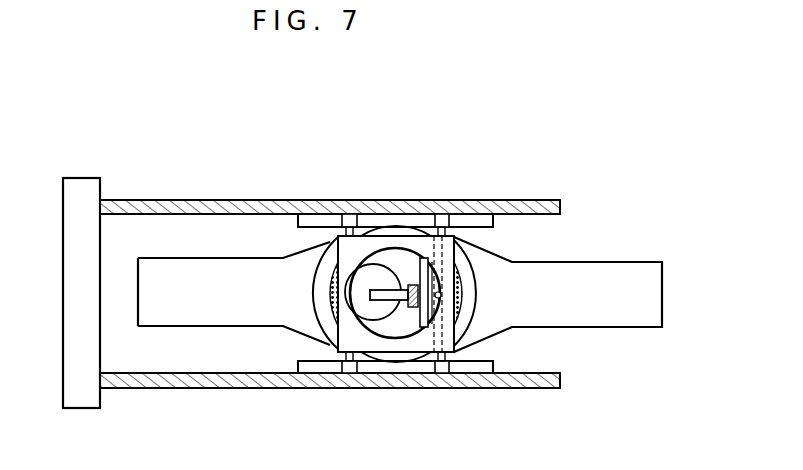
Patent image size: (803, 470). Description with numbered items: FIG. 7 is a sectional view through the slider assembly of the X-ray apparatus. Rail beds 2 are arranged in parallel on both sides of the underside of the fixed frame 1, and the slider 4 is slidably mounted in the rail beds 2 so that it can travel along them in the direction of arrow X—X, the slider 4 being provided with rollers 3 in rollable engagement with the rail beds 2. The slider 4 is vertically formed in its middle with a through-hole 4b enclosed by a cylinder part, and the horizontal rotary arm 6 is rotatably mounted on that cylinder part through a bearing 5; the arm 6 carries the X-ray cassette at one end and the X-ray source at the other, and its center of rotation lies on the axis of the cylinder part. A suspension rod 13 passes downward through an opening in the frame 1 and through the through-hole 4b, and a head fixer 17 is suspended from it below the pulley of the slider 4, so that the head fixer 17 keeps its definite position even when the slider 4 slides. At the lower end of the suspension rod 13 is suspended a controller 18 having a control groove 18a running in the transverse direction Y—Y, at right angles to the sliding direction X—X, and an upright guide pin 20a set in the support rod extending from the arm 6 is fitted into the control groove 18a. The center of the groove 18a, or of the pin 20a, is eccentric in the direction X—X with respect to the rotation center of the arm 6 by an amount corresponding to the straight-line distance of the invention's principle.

The fixed frame 1 is at (230, 200).
The rail bed 2 is at (482, 220).
The roller 3 is at (346, 220).
The slider 4 is at (330, 286).
The through-hole 4b is at (390, 255).
The bearing 5 is at (328, 303).
The horizontal rotary arm 6 is at (576, 270).
The suspension rod 13 is at (405, 287).
The head fixer 17 is at (374, 330).
The controller 18 is at (436, 305).
The control groove 18a is at (436, 232).
The guide pin 20a is at (442, 295).